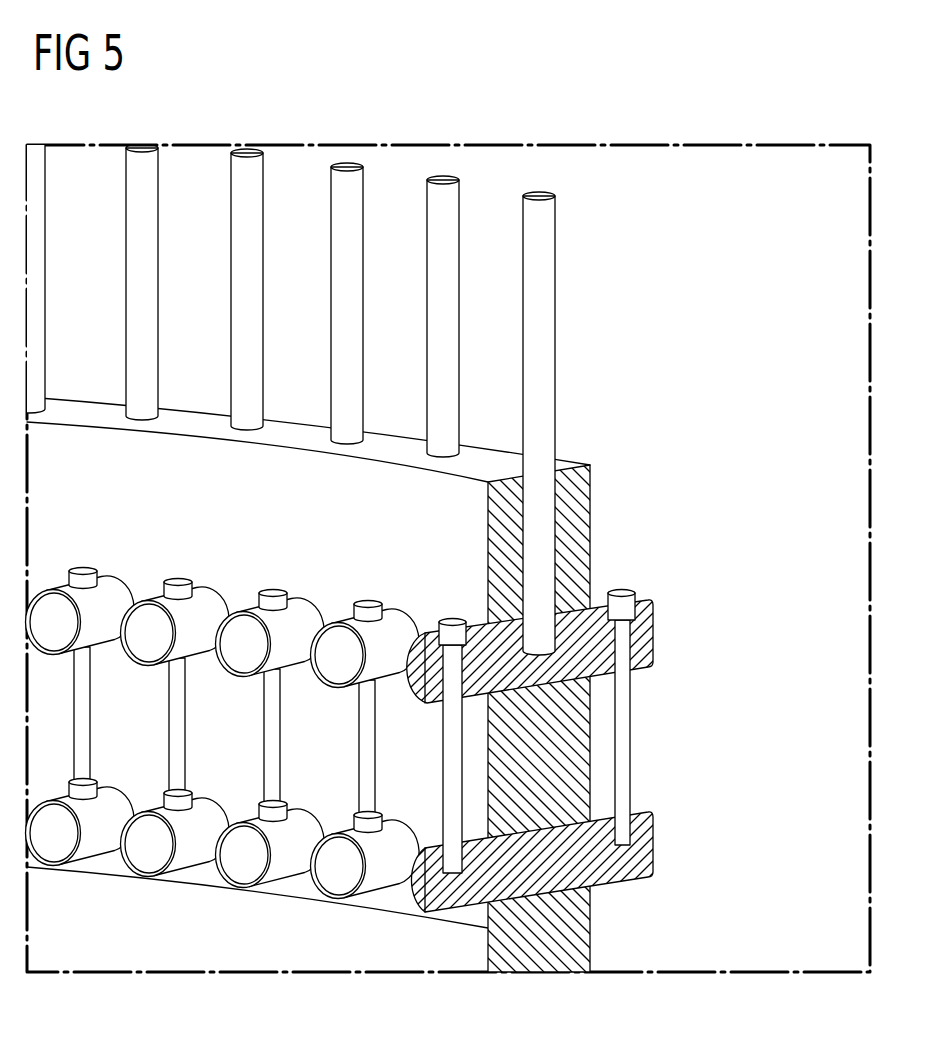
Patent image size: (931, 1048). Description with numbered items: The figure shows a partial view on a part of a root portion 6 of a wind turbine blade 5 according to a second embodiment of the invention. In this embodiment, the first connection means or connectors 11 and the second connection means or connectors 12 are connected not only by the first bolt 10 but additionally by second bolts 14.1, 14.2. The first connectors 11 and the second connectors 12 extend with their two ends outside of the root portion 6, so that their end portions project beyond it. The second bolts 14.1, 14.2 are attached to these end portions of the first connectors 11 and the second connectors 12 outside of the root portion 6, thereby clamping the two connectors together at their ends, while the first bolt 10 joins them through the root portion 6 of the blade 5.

The wind turbine blade 5 is at (435, 952).
The root portion 6 is at (590, 515).
The first bolt 10 is at (542, 318).
The first connection means 11 is at (653, 633).
The second connection means 12 is at (653, 852).
The second bolt 14.1 is at (452, 825).
The second bolt 14.2 is at (625, 743).